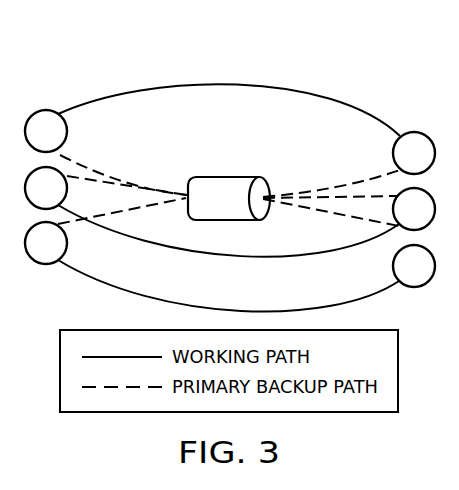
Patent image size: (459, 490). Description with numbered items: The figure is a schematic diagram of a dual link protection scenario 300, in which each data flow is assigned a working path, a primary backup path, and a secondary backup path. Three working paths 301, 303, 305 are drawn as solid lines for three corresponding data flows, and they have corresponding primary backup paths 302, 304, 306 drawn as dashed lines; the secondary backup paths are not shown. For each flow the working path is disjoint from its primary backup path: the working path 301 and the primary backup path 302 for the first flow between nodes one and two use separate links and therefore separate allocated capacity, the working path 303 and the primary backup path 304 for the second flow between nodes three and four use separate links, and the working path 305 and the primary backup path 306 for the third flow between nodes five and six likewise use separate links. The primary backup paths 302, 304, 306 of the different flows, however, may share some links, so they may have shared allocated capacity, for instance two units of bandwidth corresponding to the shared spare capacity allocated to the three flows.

The dual link protection scenario 300 is at (134, 62).
The working path 301 is at (314, 93).
The primary backup path 302 is at (79, 165).
The working path 303 is at (283, 256).
The primary backup path 304 is at (372, 193).
The working path 305 is at (205, 308).
The primary backup path 306 is at (110, 206).